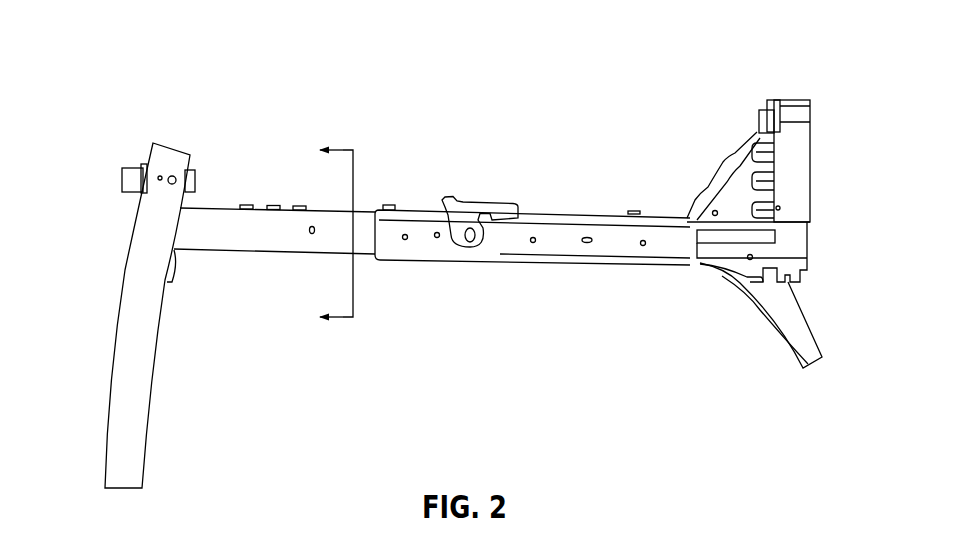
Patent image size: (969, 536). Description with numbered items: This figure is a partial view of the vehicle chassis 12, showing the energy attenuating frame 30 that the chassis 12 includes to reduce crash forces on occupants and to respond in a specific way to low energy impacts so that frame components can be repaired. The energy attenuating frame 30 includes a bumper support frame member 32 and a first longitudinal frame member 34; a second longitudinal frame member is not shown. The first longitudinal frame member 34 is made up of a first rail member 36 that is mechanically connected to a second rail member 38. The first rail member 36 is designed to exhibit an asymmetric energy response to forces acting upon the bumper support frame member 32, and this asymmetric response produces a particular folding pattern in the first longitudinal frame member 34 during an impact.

The chassis 12 is at (215, 41).
The energy attenuating frame 30 is at (815, 319).
The bumper support frame member 32 is at (120, 301).
The first longitudinal frame member 34 is at (442, 270).
The first rail member 36 is at (275, 258).
The second rail member 38 is at (596, 280).